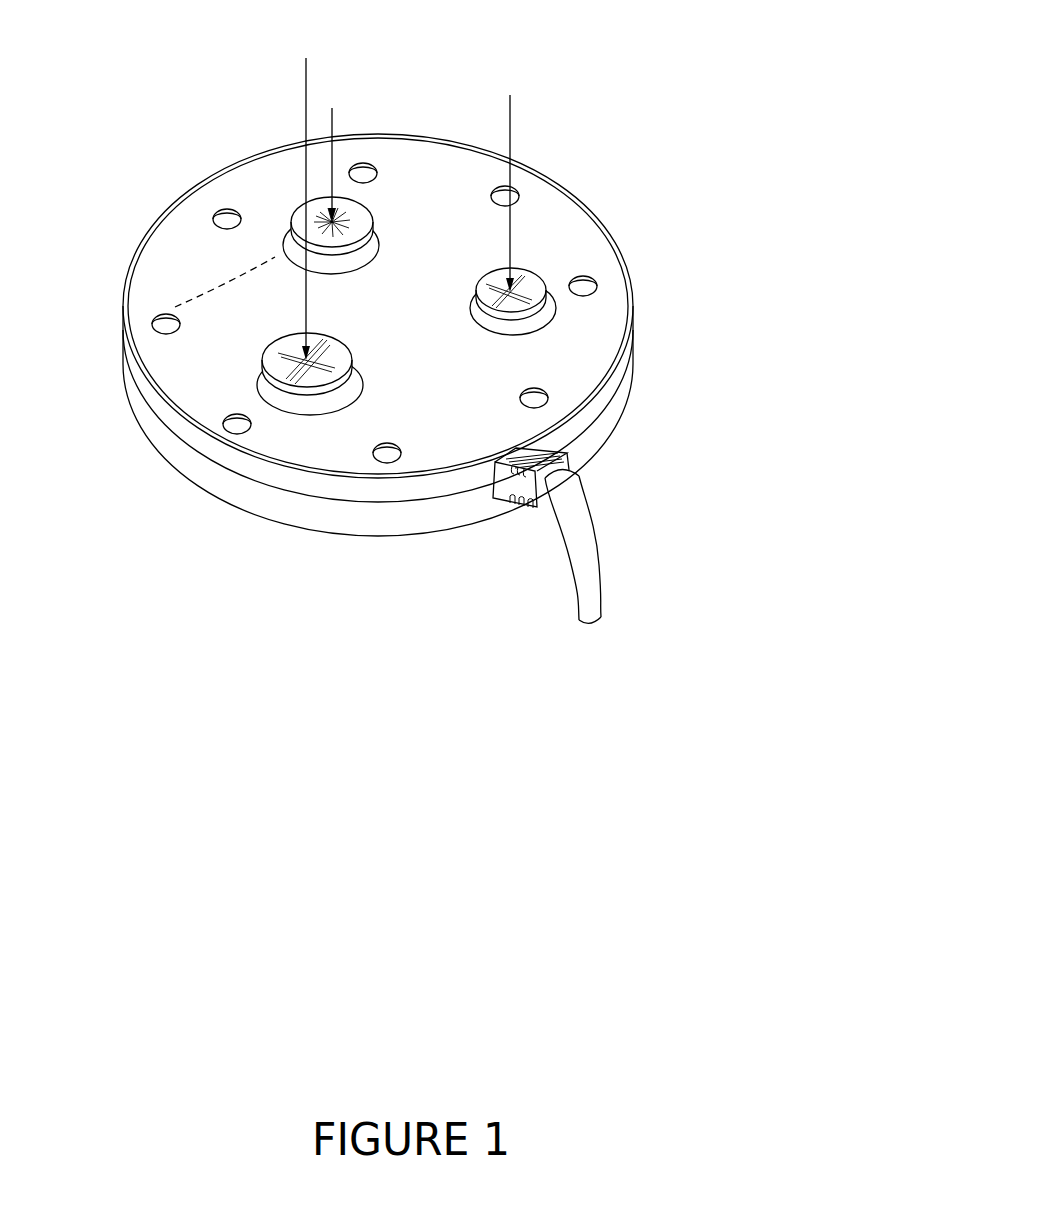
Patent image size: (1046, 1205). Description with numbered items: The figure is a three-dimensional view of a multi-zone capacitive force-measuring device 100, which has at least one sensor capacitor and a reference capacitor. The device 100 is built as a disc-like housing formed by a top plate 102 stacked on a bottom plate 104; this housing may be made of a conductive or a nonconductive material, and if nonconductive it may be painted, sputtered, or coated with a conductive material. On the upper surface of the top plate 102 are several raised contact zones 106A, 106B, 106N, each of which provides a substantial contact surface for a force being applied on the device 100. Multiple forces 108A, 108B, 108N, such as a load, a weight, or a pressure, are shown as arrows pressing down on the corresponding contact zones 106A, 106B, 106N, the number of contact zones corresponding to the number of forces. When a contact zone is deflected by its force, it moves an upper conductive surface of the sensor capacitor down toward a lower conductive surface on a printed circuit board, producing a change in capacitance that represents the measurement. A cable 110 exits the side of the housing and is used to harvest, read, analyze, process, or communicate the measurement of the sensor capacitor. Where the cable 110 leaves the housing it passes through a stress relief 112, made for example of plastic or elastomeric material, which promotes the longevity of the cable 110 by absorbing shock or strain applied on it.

The multi-zone capacitive force-measuring device 100 is at (496, 433).
The top plate 102 is at (610, 367).
The bottom plate 104 is at (600, 417).
The contact zone 106A is at (297, 207).
The contact zone 106B is at (312, 376).
The contact zone 106N is at (545, 294).
The force 108A is at (259, 196).
The force 108B is at (370, 144).
The force 108N is at (521, 164).
The cable 110 is at (582, 545).
The stress relief 112 is at (567, 463).